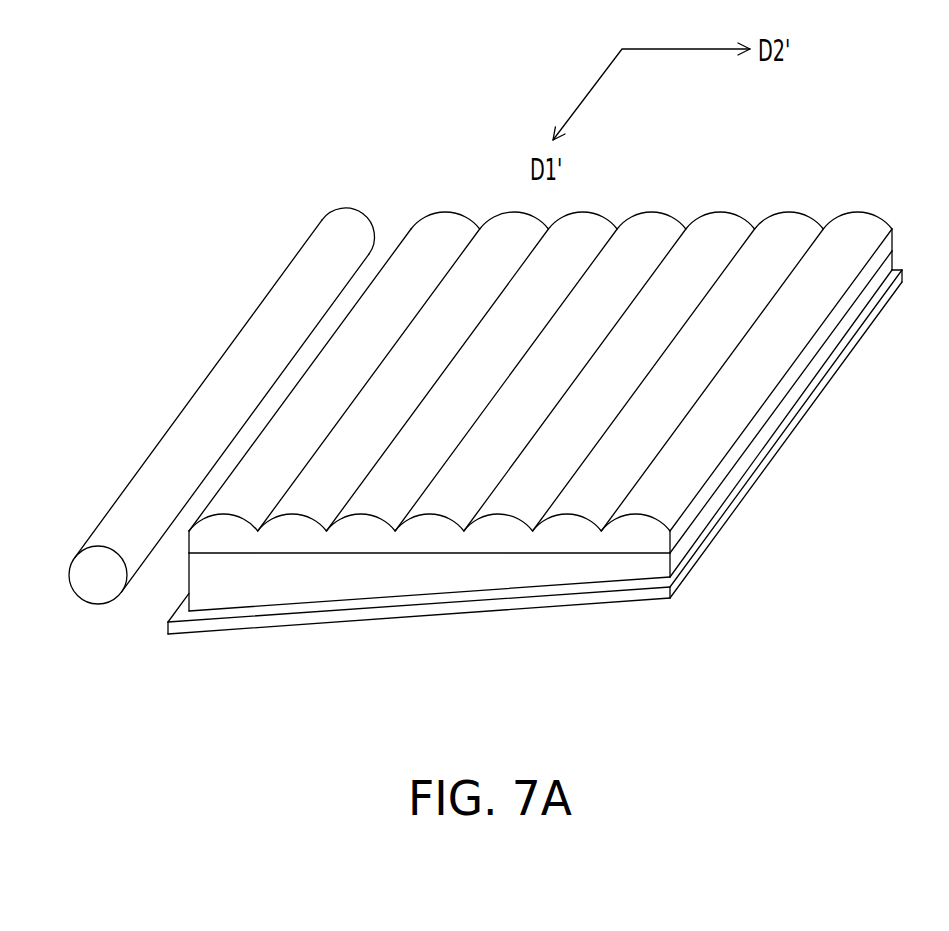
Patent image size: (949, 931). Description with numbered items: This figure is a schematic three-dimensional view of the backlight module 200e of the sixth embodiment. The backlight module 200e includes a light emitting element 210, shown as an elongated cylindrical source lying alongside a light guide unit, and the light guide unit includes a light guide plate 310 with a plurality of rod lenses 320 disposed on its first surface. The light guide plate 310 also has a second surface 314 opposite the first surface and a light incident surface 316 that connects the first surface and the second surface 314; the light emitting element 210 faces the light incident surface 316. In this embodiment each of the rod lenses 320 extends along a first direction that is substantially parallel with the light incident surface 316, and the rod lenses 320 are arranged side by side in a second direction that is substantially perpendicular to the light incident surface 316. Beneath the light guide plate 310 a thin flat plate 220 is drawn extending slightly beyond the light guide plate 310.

The backlight module 200e is at (474, 460).
The light emitting element 210 is at (97, 580).
The bottom plate / reflective sheet 220 is at (297, 622).
The light guide plate 310 is at (508, 476).
The second surface 314 is at (698, 540).
The light incident surface 316 is at (188, 580).
The rod lenses 320 is at (502, 533).